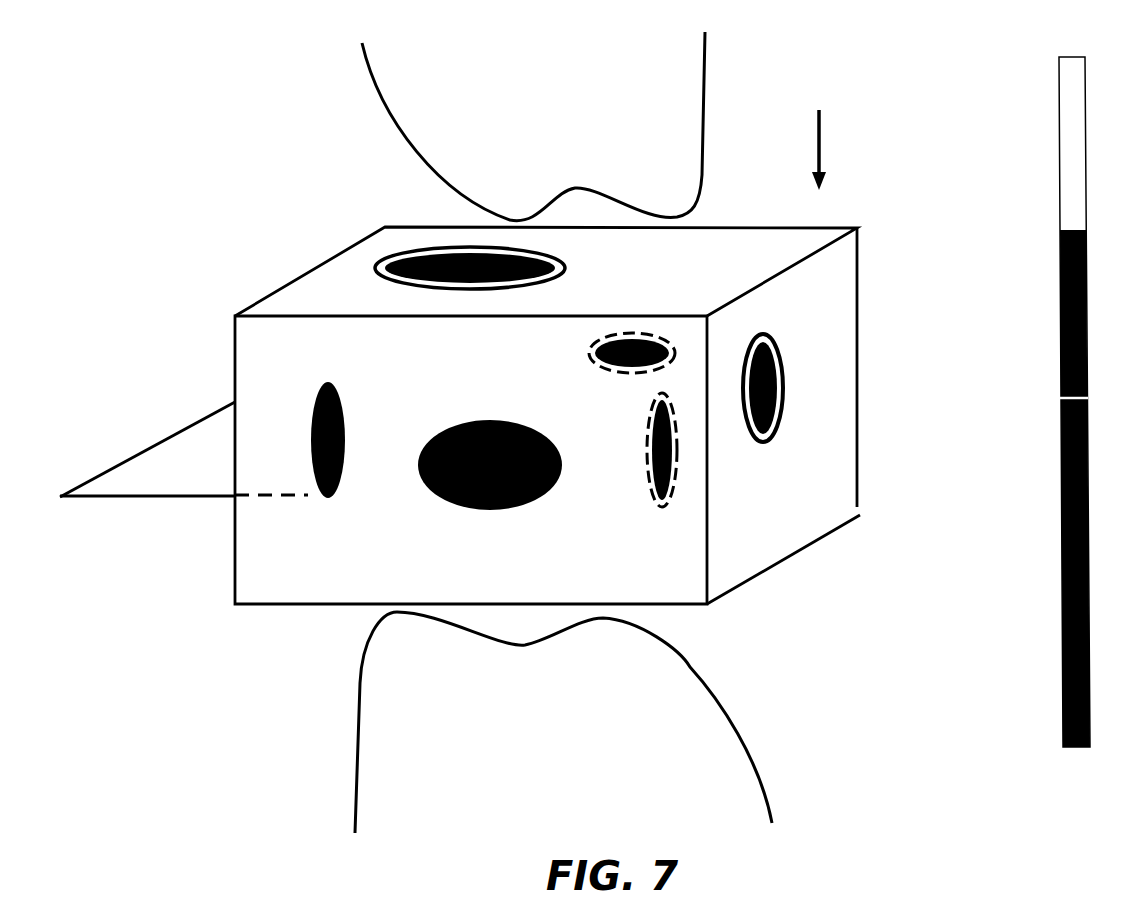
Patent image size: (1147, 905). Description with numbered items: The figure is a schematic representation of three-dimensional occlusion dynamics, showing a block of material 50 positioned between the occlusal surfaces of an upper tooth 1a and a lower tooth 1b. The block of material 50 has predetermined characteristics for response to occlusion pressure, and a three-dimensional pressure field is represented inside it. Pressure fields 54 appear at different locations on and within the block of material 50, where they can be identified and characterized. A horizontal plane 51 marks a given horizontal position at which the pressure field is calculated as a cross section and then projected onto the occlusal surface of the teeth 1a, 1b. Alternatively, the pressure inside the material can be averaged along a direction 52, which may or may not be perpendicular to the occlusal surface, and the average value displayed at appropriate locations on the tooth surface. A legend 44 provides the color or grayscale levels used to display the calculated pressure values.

The tooth 1a is at (563, 136).
The tooth 1b is at (548, 749).
The legend 44 is at (1030, 180).
The block of material 50 is at (822, 565).
The horizontal plane 51 is at (173, 481).
The direction 52 is at (819, 153).
The pressure fields 54 is at (432, 494).